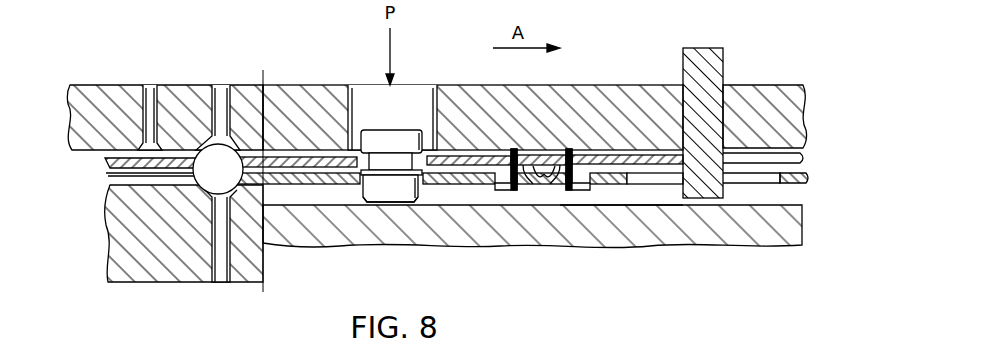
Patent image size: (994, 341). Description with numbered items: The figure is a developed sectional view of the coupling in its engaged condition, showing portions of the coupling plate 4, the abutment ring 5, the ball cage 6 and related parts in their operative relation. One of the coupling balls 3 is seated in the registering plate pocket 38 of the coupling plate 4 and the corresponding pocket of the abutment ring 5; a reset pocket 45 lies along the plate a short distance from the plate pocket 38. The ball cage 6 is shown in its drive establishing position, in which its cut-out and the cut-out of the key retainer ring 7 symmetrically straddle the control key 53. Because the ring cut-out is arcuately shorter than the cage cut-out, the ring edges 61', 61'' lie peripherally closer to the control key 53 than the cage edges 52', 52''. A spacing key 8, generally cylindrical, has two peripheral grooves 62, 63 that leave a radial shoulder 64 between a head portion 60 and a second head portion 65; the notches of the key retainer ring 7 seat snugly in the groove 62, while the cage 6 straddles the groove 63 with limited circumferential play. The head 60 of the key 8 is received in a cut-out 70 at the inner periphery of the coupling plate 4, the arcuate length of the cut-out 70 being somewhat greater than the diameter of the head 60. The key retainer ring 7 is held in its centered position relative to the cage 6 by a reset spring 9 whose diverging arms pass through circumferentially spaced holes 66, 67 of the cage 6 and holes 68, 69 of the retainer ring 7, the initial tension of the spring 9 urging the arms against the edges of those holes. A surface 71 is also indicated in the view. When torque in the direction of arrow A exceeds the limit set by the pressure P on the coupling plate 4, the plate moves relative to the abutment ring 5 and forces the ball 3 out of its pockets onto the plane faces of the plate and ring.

The coupling ball 3 is at (208, 150).
The coupling plate 4 is at (77, 118).
The abutment ring 5 is at (113, 223).
The ball cage 6 is at (96, 171).
The key retainer ring 7 is at (312, 188).
The spacing key 8 is at (390, 192).
The reset spring 9 is at (568, 149).
The plate pocket 38 is at (233, 138).
The reset pocket 45 is at (137, 148).
The cage edge 52' is at (627, 135).
The cage edge 52'' is at (788, 124).
The control key 53 is at (698, 60).
The head portion 60 is at (383, 136).
The ring edge 61' is at (636, 222).
The ring edge 61'' is at (786, 185).
The peripheral groove 62 is at (366, 199).
The peripheral groove 63 is at (420, 148).
The radial shoulder 64 is at (400, 178).
The head portion 65 is at (424, 189).
The cage hole 66 is at (537, 181).
The cage hole 67 is at (545, 183).
The retainer ring hole 68 is at (522, 189).
The retainer ring hole 69 is at (556, 186).
The cut-out 70 is at (428, 88).
The base surface 71 is at (598, 215).